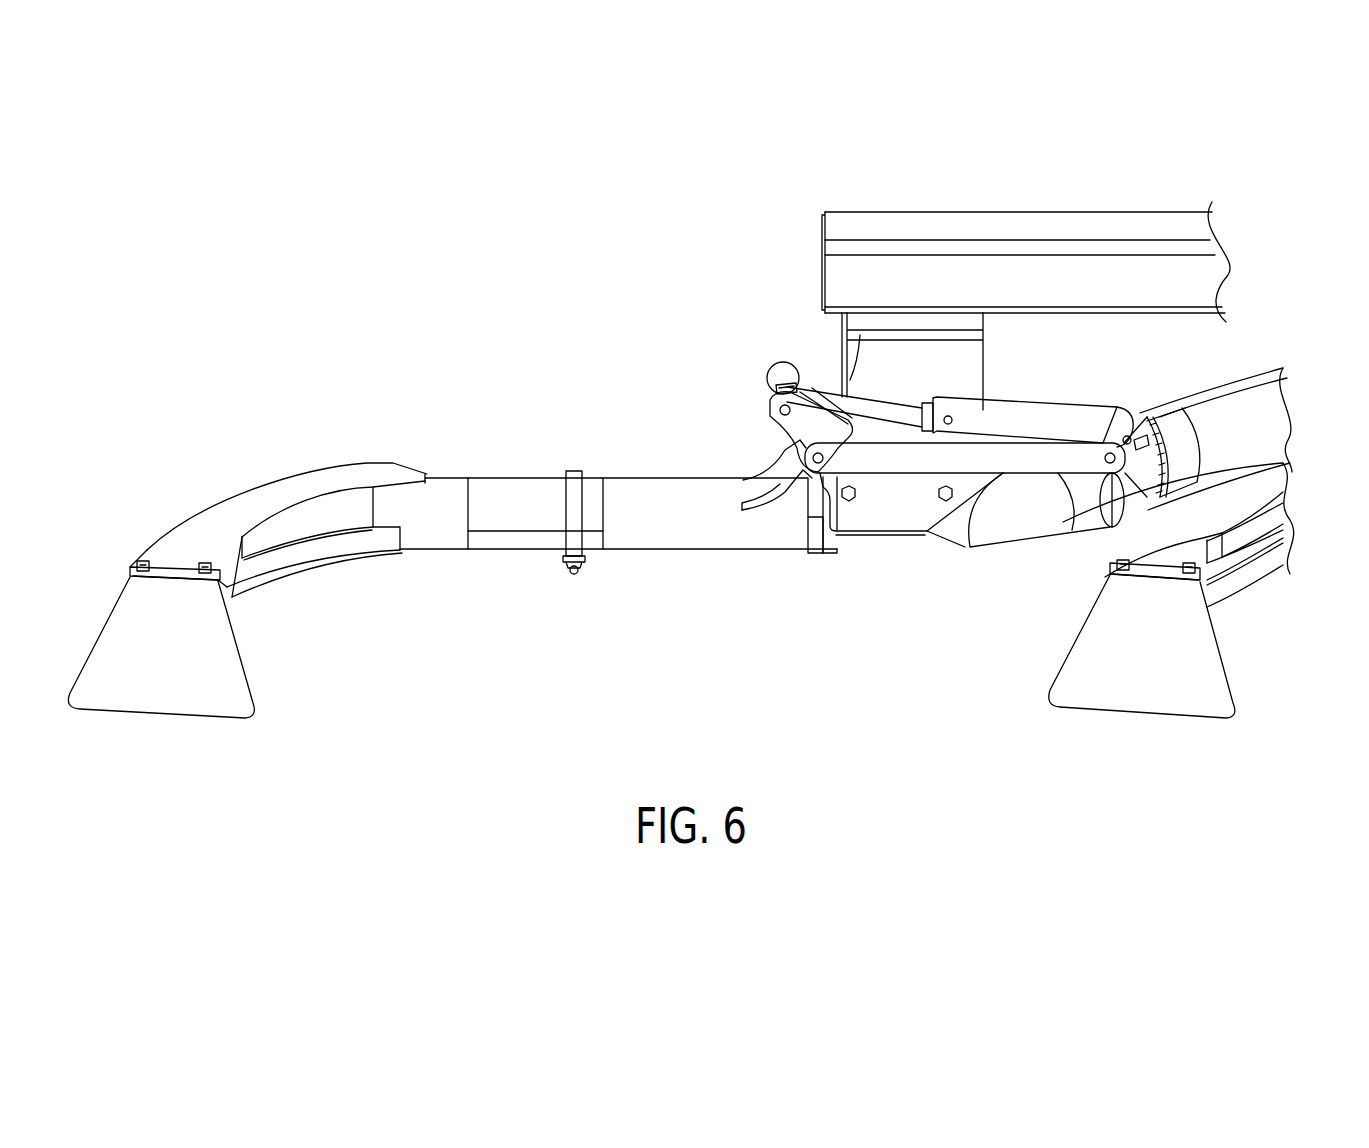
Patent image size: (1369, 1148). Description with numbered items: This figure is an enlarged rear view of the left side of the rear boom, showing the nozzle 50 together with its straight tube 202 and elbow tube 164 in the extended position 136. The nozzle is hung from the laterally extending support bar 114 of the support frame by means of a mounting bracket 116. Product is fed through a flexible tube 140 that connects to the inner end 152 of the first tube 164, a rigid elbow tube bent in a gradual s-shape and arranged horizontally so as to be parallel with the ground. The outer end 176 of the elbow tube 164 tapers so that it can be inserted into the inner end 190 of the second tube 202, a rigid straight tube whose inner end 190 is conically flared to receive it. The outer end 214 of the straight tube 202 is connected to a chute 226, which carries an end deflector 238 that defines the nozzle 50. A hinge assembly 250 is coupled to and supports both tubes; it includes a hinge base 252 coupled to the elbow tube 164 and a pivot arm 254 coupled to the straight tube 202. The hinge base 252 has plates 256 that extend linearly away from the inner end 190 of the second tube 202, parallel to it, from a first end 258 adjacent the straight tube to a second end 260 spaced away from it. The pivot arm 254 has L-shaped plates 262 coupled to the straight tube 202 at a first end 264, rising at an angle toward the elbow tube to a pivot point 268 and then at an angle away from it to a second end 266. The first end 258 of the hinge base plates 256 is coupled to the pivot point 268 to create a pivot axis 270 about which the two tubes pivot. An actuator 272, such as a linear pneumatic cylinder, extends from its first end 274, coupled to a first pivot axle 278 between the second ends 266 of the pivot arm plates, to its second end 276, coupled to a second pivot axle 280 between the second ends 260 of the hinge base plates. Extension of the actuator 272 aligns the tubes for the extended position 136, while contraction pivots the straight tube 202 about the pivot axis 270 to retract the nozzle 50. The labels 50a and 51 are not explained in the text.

The extended position 136 is at (347, 213).
The support bar 114 is at (1093, 220).
The mounting bracket 116 is at (967, 377).
The flexible tube 140 is at (1250, 397).
The inner end 152 is at (1085, 507).
The first tube 164 is at (1020, 530).
The outer end 176 is at (860, 538).
The inner end 190 is at (815, 530).
The second tube 202 is at (645, 548).
The outer end 214 is at (440, 497).
The chute 226 is at (303, 555).
The end deflector 238 is at (130, 625).
The hinge assembly 250 is at (893, 530).
The hinge base 252 is at (880, 532).
The pivot arm 254 is at (805, 430).
The plates 256 is at (920, 525).
The first end 258 is at (814, 456).
The second end 260 is at (1122, 428).
The plates 262 is at (790, 428).
The first end 264 is at (780, 505).
The second end 266 is at (781, 408).
The pivot point 268 is at (765, 470).
The pivot axis 270 is at (860, 335).
The actuator 272 is at (1040, 420).
The first end 274 is at (788, 365).
The second end 276 is at (1150, 430).
The first pivot axle 278 is at (781, 377).
The second pivot axle 280 is at (1162, 457).
The nozzle 50 is at (160, 698).
The arm 50a is at (236, 513).
The shield 51 is at (1145, 708).